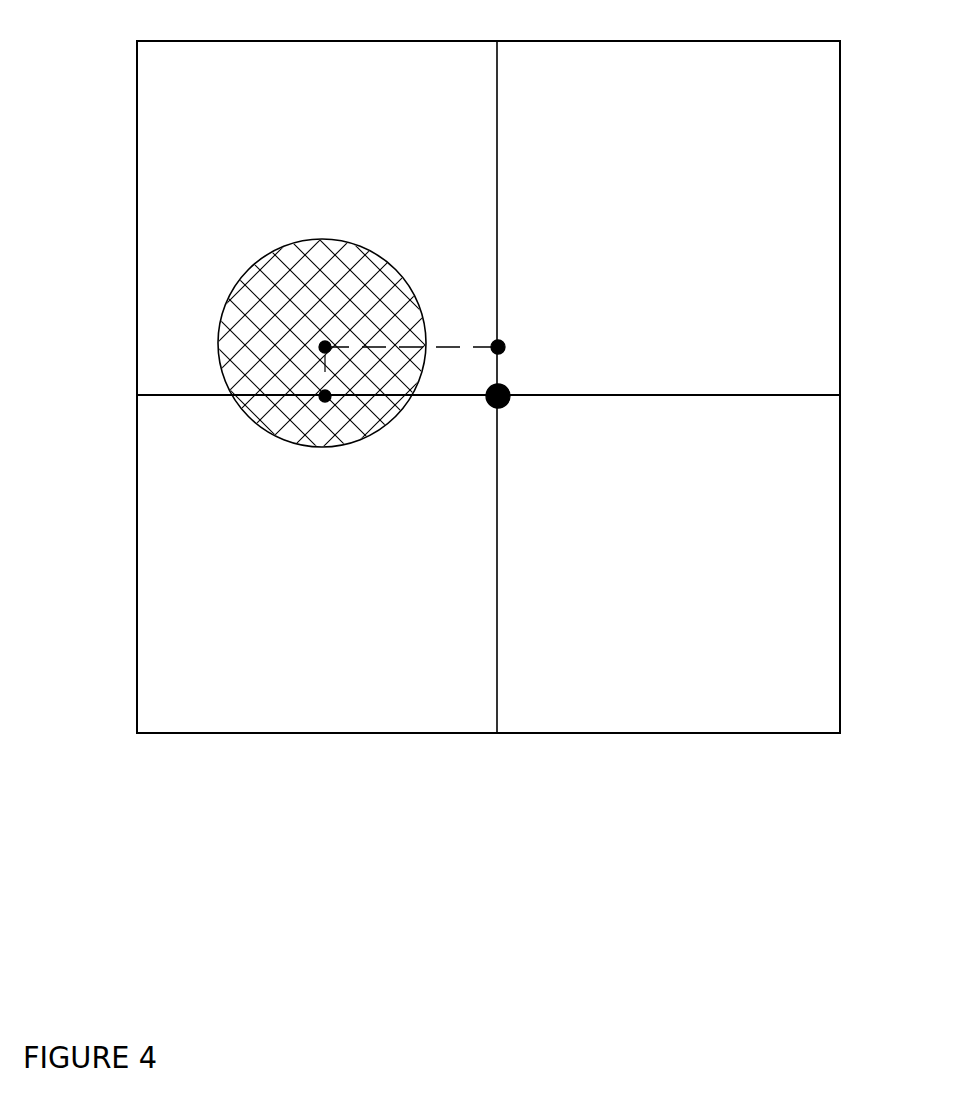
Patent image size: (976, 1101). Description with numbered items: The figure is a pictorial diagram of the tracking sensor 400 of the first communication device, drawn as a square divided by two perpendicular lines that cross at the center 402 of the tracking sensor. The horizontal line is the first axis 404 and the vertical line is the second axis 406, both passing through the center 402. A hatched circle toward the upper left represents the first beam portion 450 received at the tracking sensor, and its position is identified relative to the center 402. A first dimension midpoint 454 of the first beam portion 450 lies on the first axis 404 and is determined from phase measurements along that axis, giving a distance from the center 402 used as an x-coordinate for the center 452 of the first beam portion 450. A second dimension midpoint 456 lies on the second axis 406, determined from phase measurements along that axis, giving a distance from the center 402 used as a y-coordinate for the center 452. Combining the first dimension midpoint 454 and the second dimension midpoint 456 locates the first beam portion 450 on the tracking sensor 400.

The tracking sensor 400 is at (109, 1030).
The center of the tracking sensor 402 is at (512, 390).
The first axis 404 is at (840, 395).
The second axis 406 is at (498, 50).
The first beam portion 450 is at (270, 268).
The center of the first beam portion 452 is at (330, 344).
The first dimension midpoint 454 is at (320, 398).
The second dimension midpoint 456 is at (507, 348).